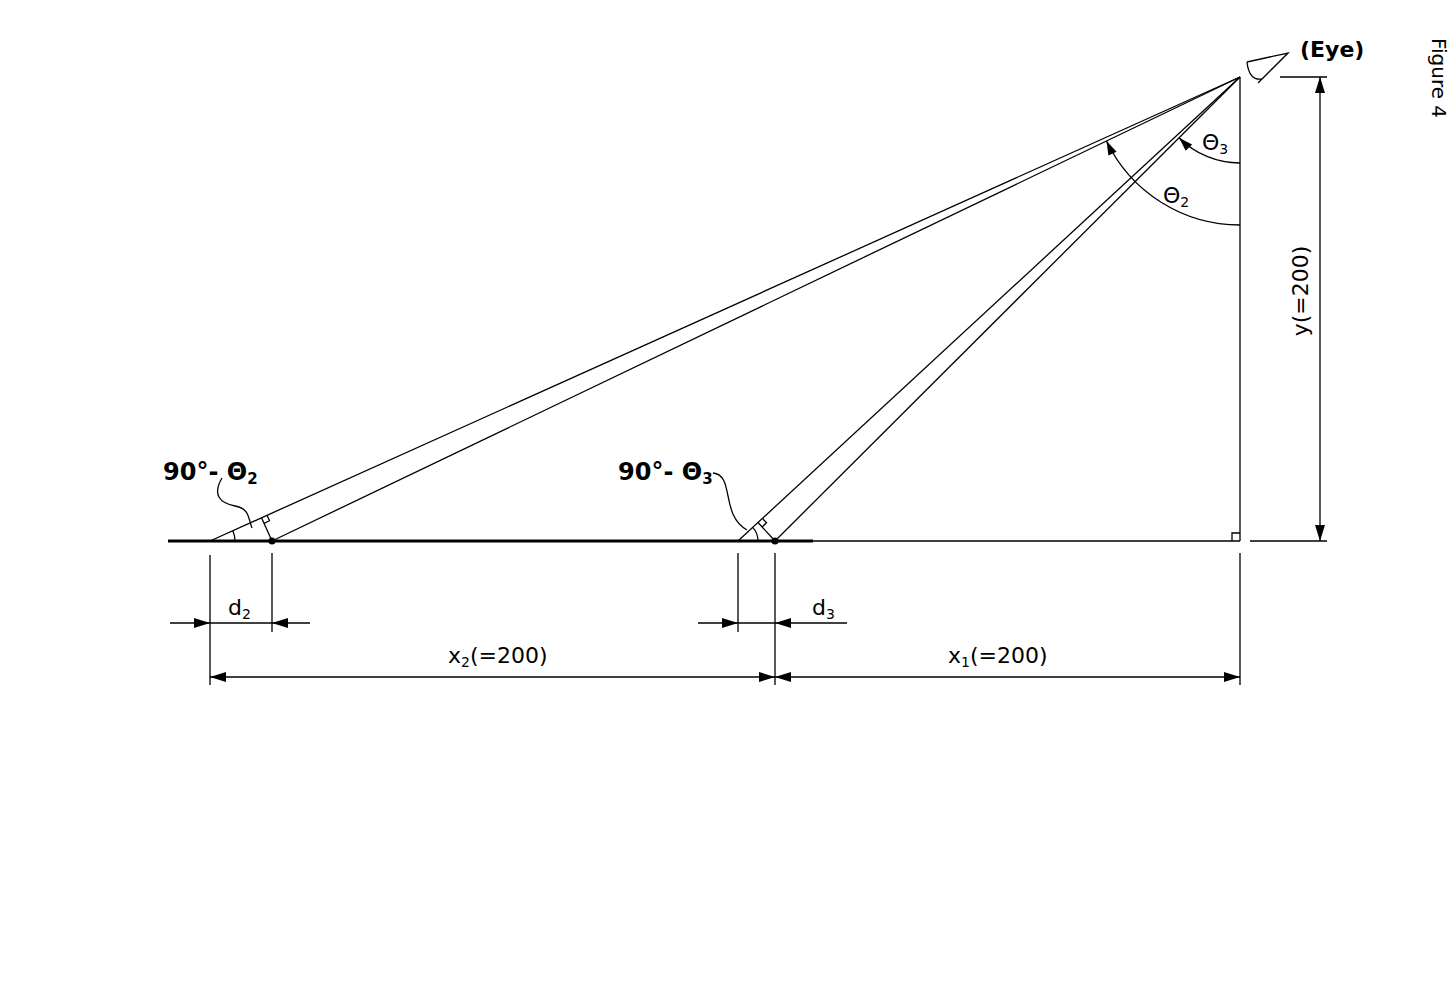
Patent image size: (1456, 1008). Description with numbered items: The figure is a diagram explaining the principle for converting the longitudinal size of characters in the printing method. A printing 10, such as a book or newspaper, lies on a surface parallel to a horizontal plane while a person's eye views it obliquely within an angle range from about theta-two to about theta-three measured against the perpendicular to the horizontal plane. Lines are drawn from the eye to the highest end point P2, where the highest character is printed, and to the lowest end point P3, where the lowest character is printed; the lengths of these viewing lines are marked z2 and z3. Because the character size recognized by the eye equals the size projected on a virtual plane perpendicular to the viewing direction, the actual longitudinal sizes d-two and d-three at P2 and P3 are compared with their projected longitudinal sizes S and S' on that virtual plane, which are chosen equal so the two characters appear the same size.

The printing 10 is at (540, 540).
The highest end point P2 is at (273, 544).
The lowest end point P3 is at (776, 544).
The longitudinal size on the virtual plane S is at (286, 489).
The perpendicular segment at P3 S' is at (779, 489).
The viewing distance to P2 z2 is at (725, 309).
The viewing distance to P3 z3 is at (989, 309).